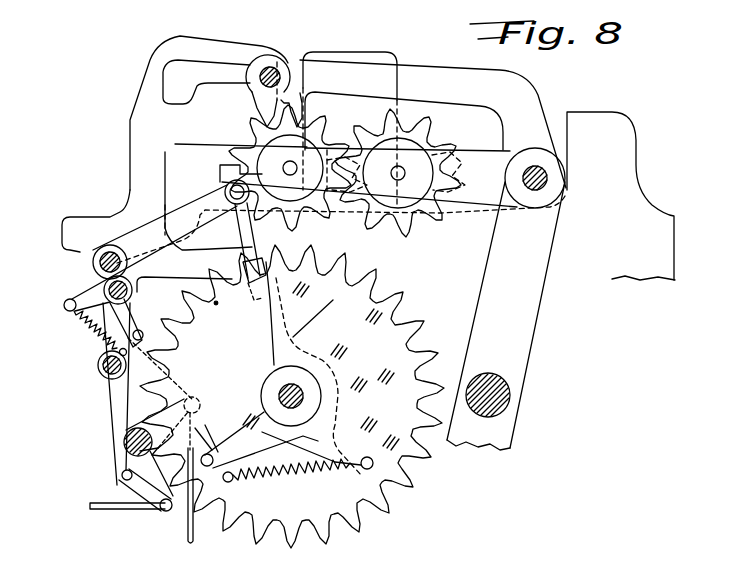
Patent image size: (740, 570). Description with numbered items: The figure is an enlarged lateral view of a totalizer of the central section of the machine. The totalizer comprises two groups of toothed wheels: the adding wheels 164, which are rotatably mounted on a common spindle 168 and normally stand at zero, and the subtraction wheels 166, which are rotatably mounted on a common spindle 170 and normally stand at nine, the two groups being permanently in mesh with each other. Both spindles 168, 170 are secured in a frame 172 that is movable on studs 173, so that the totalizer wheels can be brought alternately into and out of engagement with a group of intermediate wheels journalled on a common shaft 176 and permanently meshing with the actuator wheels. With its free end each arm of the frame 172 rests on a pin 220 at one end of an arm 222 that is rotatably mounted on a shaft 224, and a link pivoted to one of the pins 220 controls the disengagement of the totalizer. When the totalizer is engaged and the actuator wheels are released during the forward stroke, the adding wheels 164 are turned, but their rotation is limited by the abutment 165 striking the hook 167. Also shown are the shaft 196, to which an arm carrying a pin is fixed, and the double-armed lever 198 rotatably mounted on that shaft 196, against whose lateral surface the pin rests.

The adding wheels 164 is at (325, 135).
The abutment 165 is at (308, 217).
The subtraction wheels 166 is at (411, 228).
The hook 167 is at (280, 280).
The spindle 168 is at (287, 167).
The spindle 170 is at (398, 181).
The frame 172 is at (465, 158).
The studs 173 is at (548, 179).
The shaft 176 is at (282, 380).
The shaft 196 is at (507, 395).
The double-armed lever 198 is at (533, 310).
The pin 220 is at (225, 187).
The arm 222 is at (137, 238).
The shaft 224 is at (100, 265).